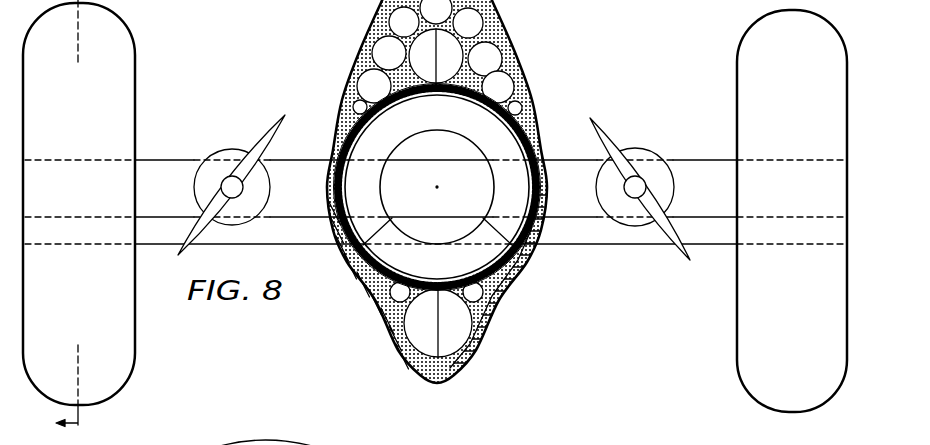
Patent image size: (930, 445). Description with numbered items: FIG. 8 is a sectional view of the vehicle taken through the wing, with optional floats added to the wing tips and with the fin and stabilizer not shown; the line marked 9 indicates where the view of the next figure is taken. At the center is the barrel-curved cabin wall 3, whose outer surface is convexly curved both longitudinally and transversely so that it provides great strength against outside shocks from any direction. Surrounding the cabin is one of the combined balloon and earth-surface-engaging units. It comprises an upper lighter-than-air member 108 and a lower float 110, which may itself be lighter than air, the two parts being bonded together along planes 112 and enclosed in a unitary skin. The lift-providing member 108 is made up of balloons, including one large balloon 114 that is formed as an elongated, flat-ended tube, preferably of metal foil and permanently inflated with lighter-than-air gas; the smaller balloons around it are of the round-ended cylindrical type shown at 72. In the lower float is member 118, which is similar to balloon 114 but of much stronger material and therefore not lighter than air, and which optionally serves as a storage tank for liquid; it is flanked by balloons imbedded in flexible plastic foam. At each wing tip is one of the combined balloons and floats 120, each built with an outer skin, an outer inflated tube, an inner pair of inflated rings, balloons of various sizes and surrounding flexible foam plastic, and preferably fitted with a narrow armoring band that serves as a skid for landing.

The barrel-curved cabin wall 3 is at (414, 139).
The round-ended cylindrical balloon 72 is at (445, 23).
The upper lighter-than-air member 108 is at (528, 60).
The lower float 110 is at (500, 328).
The bonding planes 112 is at (547, 190).
The large balloon 114 is at (412, 67).
The member similar to balloon 114 118 is at (442, 336).
The combined balloons and floats 120 is at (62, 296).
The section line for FIG. 9 is at (59, 418).